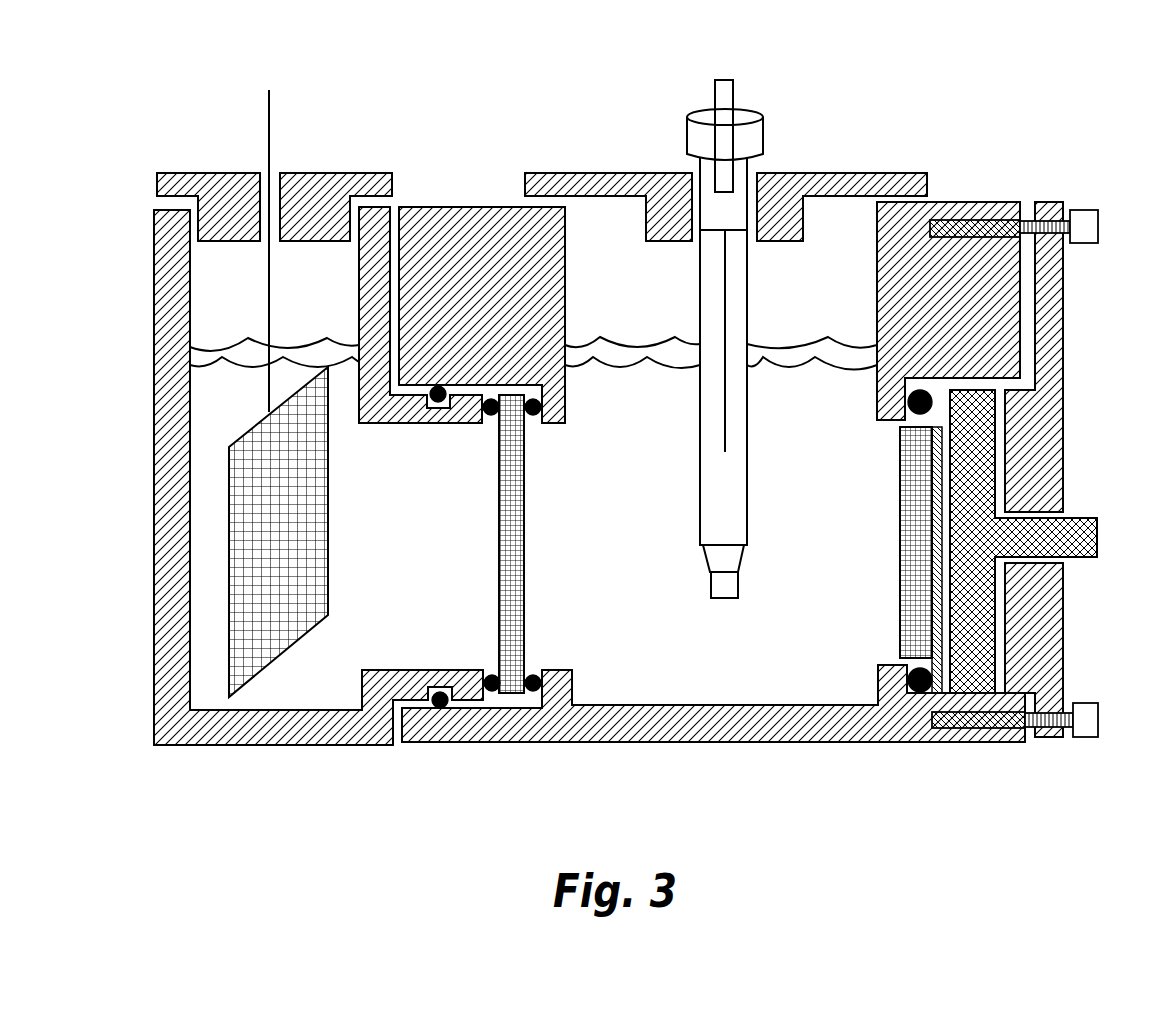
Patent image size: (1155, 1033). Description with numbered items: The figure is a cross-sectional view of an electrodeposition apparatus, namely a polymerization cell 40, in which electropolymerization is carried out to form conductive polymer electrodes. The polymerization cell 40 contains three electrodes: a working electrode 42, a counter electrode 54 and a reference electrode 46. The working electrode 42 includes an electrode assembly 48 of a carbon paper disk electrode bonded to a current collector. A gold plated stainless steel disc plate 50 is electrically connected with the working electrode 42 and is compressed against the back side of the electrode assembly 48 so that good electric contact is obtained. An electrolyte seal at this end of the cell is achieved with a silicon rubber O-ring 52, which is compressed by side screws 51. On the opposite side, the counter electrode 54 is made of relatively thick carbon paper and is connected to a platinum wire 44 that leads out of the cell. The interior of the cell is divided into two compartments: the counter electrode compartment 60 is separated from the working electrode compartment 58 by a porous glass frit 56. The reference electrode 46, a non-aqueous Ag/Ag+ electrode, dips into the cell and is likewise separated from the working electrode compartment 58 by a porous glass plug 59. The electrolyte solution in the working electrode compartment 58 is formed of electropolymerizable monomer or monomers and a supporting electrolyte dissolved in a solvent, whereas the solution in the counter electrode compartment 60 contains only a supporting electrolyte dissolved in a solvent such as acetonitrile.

The polymerization cell 40 is at (145, 290).
The working electrode 42 is at (1070, 557).
The platinum wire 44 is at (268, 113).
The reference electrode 46 is at (757, 110).
The electrode assembly 48 is at (898, 583).
The gold plated stainless steel disc plate 50 is at (1003, 470).
The side screws 51 is at (1085, 208).
The silicon rubber O-ring 52 is at (920, 692).
The counter electrode 54 is at (265, 605).
The porous glass frit 56 is at (530, 605).
The working electrode compartment 58 is at (700, 692).
The porous glass plug 59 is at (740, 588).
The counter electrode compartment 60 is at (267, 695).